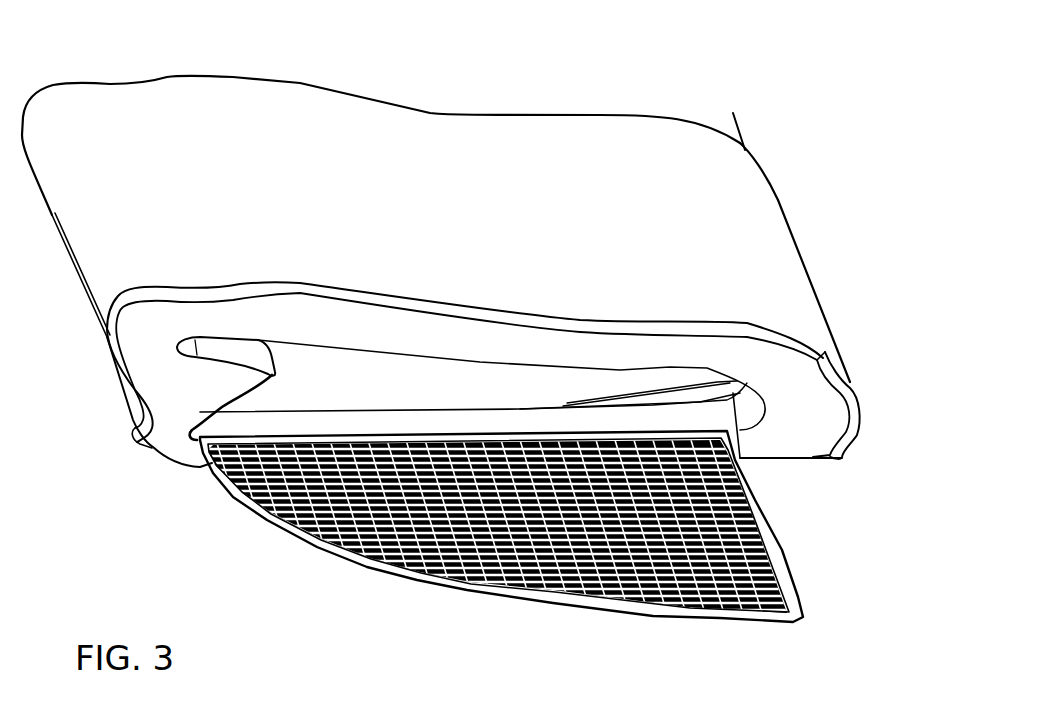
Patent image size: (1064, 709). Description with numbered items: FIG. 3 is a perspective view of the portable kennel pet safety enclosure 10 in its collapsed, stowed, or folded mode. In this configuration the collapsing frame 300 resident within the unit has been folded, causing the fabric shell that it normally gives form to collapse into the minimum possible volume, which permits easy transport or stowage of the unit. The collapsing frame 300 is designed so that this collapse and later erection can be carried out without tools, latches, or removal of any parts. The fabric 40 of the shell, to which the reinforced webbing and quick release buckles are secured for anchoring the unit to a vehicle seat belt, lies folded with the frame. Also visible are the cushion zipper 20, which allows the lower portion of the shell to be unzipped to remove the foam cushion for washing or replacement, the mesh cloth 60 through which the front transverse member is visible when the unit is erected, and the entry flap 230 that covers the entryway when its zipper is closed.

The portable kennel pet safety enclosure 10 is at (585, 160).
The fabric 40 is at (770, 270).
The cushion zipper 20 is at (182, 402).
The collapsing frame 300 is at (727, 388).
The mesh cloth 60 is at (447, 580).
The entry flap 230 is at (757, 537).